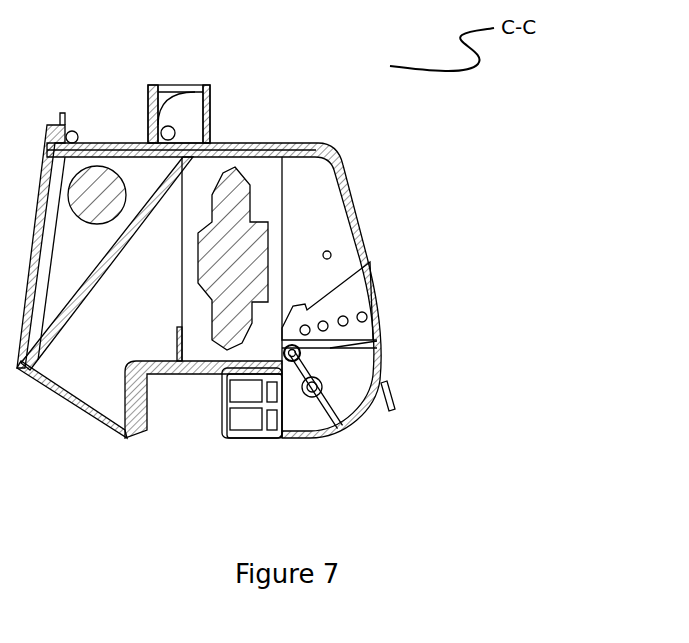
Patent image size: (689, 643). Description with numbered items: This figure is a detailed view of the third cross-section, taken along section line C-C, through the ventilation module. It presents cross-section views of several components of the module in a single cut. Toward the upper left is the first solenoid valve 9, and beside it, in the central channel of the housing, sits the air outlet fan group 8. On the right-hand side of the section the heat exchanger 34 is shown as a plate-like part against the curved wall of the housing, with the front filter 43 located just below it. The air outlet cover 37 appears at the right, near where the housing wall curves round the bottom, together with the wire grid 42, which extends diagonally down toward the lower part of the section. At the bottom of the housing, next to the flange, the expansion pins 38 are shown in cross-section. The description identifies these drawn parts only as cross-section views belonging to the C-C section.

The air outlet fan group 8 is at (230, 205).
The first solenoid valve 9 is at (91, 187).
The heat exchanger 34 is at (348, 292).
The air outlet cover 37 is at (322, 391).
The expansion pins 38 is at (271, 428).
The wire grid 42 is at (339, 420).
The front filter 43 is at (300, 350).